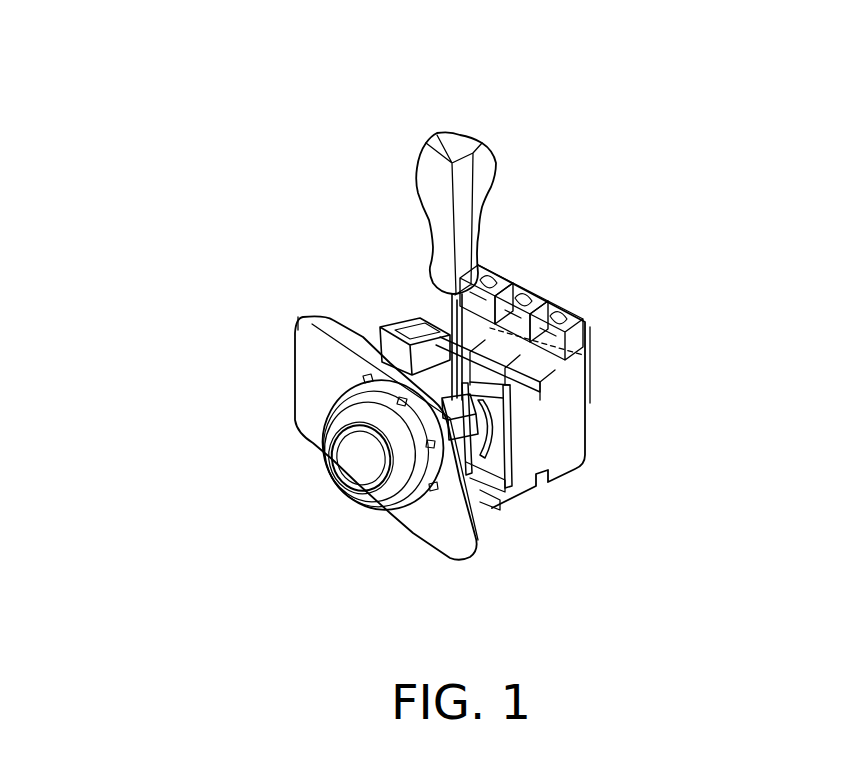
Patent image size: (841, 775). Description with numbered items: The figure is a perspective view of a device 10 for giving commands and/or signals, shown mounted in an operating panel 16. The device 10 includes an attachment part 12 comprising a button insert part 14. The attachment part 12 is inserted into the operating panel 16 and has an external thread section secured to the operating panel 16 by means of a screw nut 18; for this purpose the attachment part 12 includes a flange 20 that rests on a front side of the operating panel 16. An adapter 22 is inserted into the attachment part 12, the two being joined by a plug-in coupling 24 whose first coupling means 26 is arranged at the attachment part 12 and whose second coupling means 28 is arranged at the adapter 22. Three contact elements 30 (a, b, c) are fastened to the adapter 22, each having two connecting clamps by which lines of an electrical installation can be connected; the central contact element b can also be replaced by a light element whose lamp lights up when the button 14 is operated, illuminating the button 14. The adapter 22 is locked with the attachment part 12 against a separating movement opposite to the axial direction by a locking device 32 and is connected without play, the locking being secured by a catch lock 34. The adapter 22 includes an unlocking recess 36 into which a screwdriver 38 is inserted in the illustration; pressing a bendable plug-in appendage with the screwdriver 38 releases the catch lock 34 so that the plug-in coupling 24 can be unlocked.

The device 10 is at (378, 240).
The attachment part 12 is at (313, 420).
The button insert part 14 is at (360, 463).
The operating panel 16 is at (455, 533).
The screw nut 18 is at (276, 397).
The flange 20 is at (355, 373).
The adapter 22 is at (470, 447).
The plug-in coupling 24 is at (497, 443).
The first coupling means 26 is at (237, 252).
The second coupling means 28 is at (400, 362).
The contact elements 30 is at (611, 288).
The locking device 32 is at (647, 435).
The catch lock 34 is at (507, 427).
The unlocking recess 36 is at (470, 385).
The screwdriver 38 is at (462, 138).
The contact element a is at (510, 277).
The contact element b is at (543, 293).
The contact element c is at (583, 310).